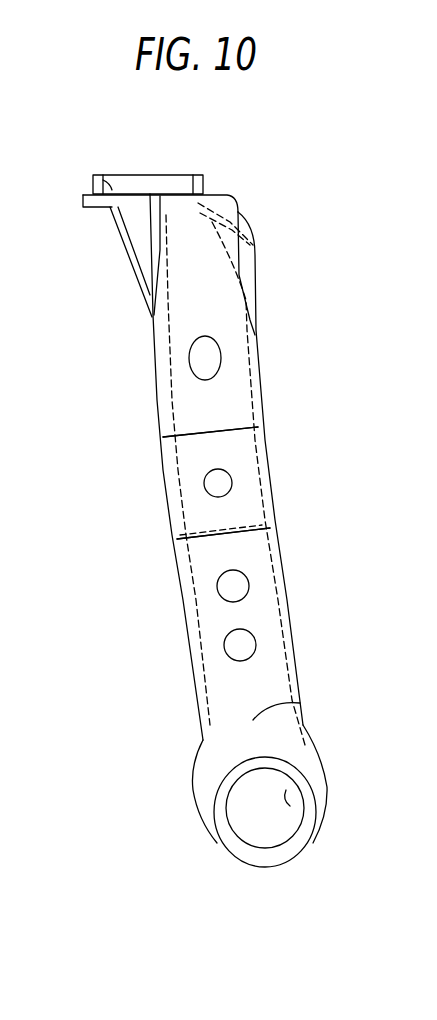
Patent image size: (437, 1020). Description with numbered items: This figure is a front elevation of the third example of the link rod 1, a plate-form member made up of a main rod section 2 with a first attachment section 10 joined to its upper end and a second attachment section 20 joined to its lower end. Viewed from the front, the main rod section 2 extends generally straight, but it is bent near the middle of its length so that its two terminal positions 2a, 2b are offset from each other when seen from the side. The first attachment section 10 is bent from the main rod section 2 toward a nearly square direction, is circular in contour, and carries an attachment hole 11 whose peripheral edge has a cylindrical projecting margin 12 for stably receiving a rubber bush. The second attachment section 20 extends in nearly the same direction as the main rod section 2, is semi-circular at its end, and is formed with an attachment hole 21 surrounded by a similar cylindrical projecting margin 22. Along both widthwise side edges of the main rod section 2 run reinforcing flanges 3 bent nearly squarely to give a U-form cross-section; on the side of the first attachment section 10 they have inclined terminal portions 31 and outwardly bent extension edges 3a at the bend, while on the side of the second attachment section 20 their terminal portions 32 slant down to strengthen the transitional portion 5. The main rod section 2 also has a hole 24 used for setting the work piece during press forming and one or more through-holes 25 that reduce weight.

The link rod 1 is at (297, 153).
The main rod section 2 is at (286, 551).
The terminal position of the main rod section 2a is at (232, 330).
The terminal position of the main rod section 2b is at (263, 677).
The reinforcing flange 3 is at (258, 431).
The extension edge 3a is at (132, 262).
The transitional portion 5 is at (253, 720).
The first attachment section 10 is at (80, 196).
The attachment hole 11 is at (110, 185).
The cylindrical projecting margin 12 is at (152, 183).
The second attachment section 20 is at (302, 862).
The attachment hole 21 is at (287, 810).
The cylindrical projecting margin 22 is at (230, 835).
The hole 24 is at (200, 360).
The through-hole 25 is at (232, 650).
The terminal portion 31 is at (133, 222).
The terminal portion 32 is at (203, 740).